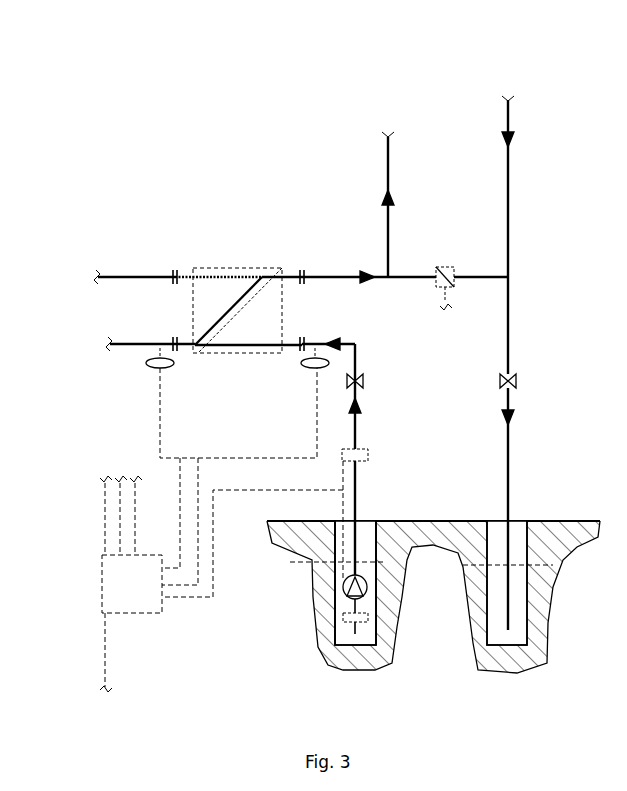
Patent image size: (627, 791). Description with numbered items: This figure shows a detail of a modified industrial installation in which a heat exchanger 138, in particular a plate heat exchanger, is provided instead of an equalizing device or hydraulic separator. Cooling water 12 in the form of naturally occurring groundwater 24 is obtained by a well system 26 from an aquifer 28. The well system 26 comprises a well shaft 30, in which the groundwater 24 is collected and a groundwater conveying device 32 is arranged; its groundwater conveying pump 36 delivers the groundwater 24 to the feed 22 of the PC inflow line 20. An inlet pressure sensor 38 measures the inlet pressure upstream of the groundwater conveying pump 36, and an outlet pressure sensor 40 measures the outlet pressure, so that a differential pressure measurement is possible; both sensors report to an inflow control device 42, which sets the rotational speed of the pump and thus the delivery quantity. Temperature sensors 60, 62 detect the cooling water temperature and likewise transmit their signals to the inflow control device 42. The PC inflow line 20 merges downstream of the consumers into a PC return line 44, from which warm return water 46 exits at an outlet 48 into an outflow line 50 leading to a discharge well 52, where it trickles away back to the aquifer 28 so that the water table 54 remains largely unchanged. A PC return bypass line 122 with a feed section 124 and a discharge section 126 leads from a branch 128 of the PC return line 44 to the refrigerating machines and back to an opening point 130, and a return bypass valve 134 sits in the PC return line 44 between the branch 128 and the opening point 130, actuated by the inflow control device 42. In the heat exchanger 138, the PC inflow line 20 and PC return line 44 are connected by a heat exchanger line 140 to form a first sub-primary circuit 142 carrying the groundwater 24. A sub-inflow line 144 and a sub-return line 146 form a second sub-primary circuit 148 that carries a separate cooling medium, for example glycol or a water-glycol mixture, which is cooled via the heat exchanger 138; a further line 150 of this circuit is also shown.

The cooling water 12 is at (356, 428).
The PC inflow line 20 is at (358, 344).
The feed 22 is at (362, 378).
The groundwater 24 is at (365, 628).
The well system 26 is at (408, 625).
The aquifer 28 is at (346, 655).
The well shaft 30 is at (370, 527).
The groundwater conveying device 32 is at (340, 603).
The groundwater conveying pump 36 is at (367, 585).
The inlet pressure sensor 38 is at (347, 620).
The outlet pressure sensor 40 is at (370, 456).
The inflow control device 42 is at (145, 600).
The PC return line 44 is at (340, 277).
The return water 46 is at (508, 320).
The outlet 48 is at (508, 385).
The outflow line 50 is at (508, 454).
The discharge well 52 is at (520, 535).
The water table 54 is at (497, 563).
The temperature sensor 60 is at (310, 370).
The temperature sensor 62 is at (165, 370).
The PC return bypass line 122 is at (465, 108).
The feed section 124 is at (388, 165).
The discharge section 126 is at (508, 194).
The branch 128 is at (388, 277).
The opening point 130 is at (508, 277).
The return bypass valve 134 is at (447, 267).
The heat exchanger 138 is at (262, 280).
The heat exchanger line 140 is at (255, 298).
The first sub-primary circuit 142 is at (495, 357).
The sub-inflow line 144 is at (133, 344).
The sub-return line 146 is at (118, 277).
The second sub-primary circuit 148 is at (135, 325).
The secondary pipe 150 is at (148, 277).